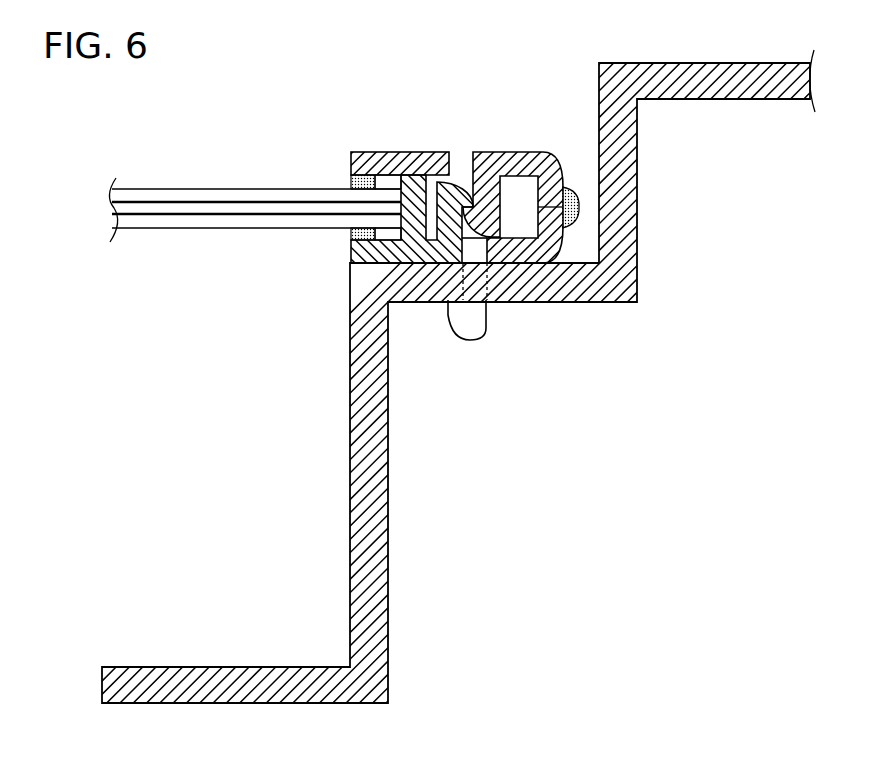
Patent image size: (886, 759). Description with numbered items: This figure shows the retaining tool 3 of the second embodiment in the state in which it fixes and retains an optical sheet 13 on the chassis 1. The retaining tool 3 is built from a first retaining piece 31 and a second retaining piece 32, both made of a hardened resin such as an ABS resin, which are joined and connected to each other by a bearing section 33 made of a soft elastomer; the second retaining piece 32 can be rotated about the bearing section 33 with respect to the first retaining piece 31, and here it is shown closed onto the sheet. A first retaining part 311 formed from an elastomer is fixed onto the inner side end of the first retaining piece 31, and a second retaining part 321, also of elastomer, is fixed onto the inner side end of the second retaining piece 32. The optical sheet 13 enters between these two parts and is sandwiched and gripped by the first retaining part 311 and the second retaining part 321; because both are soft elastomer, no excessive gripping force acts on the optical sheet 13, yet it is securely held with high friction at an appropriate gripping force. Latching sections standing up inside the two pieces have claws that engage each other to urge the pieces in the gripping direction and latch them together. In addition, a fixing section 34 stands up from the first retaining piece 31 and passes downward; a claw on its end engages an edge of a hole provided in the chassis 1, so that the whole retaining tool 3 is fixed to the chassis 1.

The chassis 1 is at (385, 480).
The retaining tool 3 is at (388, 113).
The optical sheet 13 is at (172, 196).
The first retaining piece 31 is at (351, 255).
The second retaining piece 32 is at (441, 151).
The bearing section 33 is at (567, 187).
The fixing section 34 is at (473, 328).
The first retaining part 311 is at (351, 233).
The second retaining part 321 is at (351, 181).